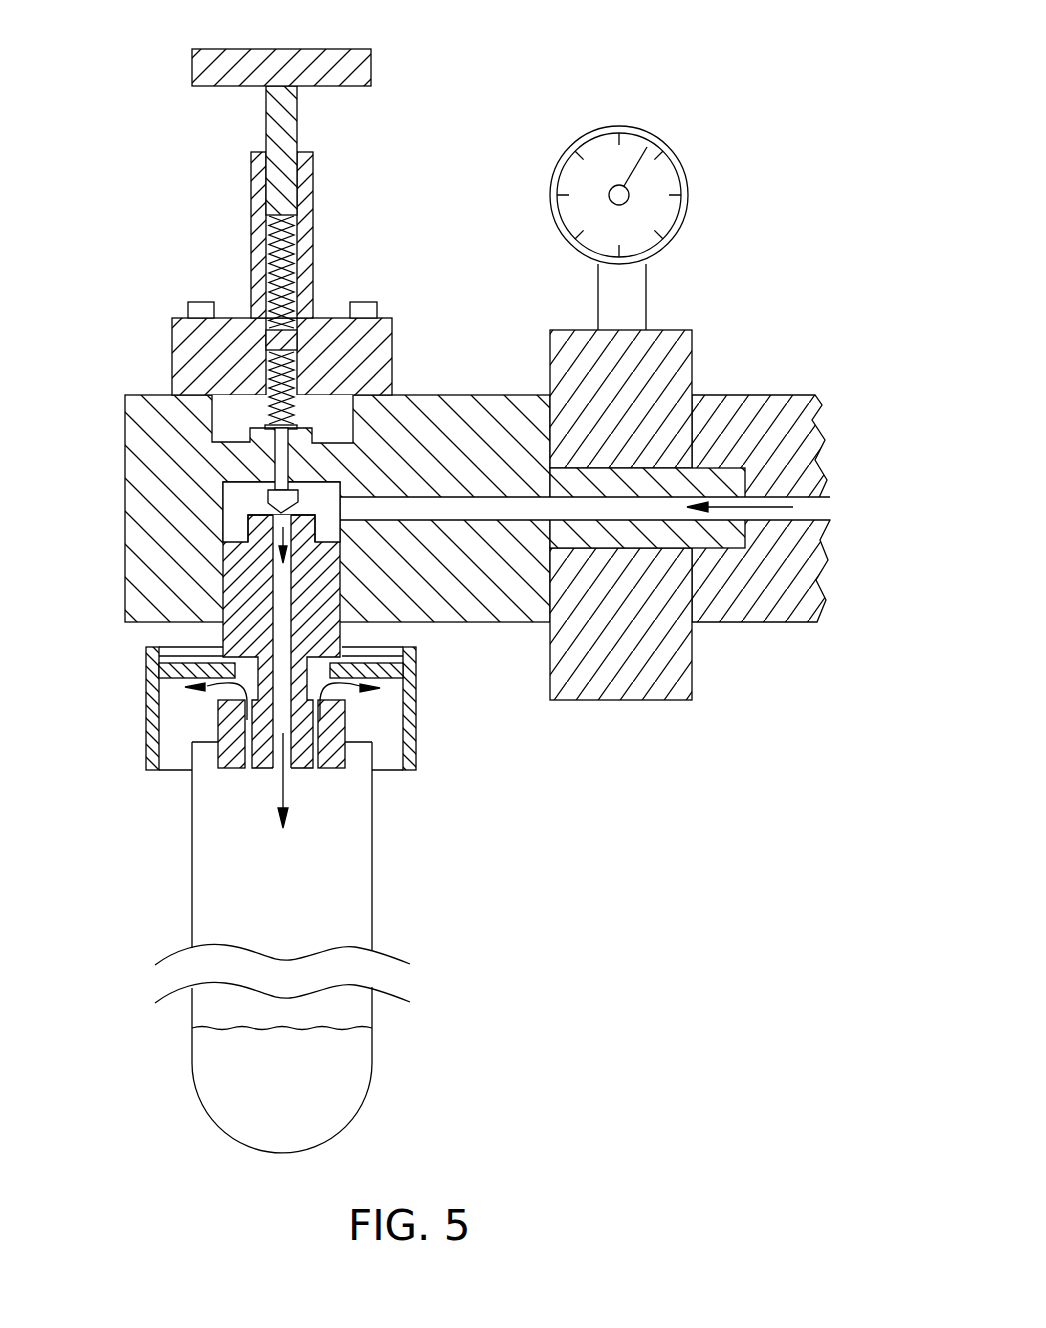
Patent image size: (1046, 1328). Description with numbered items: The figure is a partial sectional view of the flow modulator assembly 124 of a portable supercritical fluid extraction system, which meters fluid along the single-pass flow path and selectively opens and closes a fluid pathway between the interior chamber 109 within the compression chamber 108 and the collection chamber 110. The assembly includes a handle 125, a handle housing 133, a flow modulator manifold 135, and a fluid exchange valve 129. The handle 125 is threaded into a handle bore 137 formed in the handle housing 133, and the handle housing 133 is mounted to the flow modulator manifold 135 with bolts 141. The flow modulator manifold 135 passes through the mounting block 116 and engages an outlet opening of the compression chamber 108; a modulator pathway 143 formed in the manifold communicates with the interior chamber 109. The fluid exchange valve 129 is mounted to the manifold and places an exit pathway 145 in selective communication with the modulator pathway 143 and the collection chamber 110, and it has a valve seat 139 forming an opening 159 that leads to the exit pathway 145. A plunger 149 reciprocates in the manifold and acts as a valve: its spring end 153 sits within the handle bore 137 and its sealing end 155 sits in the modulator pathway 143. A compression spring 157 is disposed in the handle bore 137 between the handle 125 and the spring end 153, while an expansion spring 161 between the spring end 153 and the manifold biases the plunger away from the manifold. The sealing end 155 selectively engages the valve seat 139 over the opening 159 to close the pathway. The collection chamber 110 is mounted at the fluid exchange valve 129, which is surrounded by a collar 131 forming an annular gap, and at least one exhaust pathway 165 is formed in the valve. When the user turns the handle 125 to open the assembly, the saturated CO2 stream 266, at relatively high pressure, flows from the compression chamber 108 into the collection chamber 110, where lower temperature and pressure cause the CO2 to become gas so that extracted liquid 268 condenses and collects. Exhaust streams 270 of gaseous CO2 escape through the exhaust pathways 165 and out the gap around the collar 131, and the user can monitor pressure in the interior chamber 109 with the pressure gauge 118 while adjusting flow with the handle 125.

The compression chamber 108 is at (762, 607).
The interior chamber 109 is at (797, 497).
The collection chamber 110 is at (335, 923).
The mounting block 116 is at (612, 660).
The pressure gauge 118 is at (672, 160).
The flow modulator assembly 124 is at (297, 226).
The handle 125 is at (362, 73).
The fluid exchange valve 129 is at (322, 740).
The collar 131 is at (150, 725).
The handle housing 133 is at (336, 329).
The flow modulator manifold 135 is at (153, 481).
The handle bore 137 is at (290, 236).
The valve seat 139 is at (278, 517).
The bolts 141 is at (363, 310).
The modulator pathway 143 is at (500, 507).
The exit pathway 145 is at (283, 647).
The plunger 149 is at (280, 394).
The spring end 153 is at (287, 342).
The sealing end 155 is at (280, 512).
The compression spring 157 is at (303, 210).
The opening 159 is at (274, 485).
The expansion spring 161 is at (290, 375).
The exhaust pathway 165 is at (247, 748).
The saturated CO2 stream 266 is at (770, 508).
The extracted liquid 268 is at (348, 1045).
The exhaust streams 270 is at (207, 697).